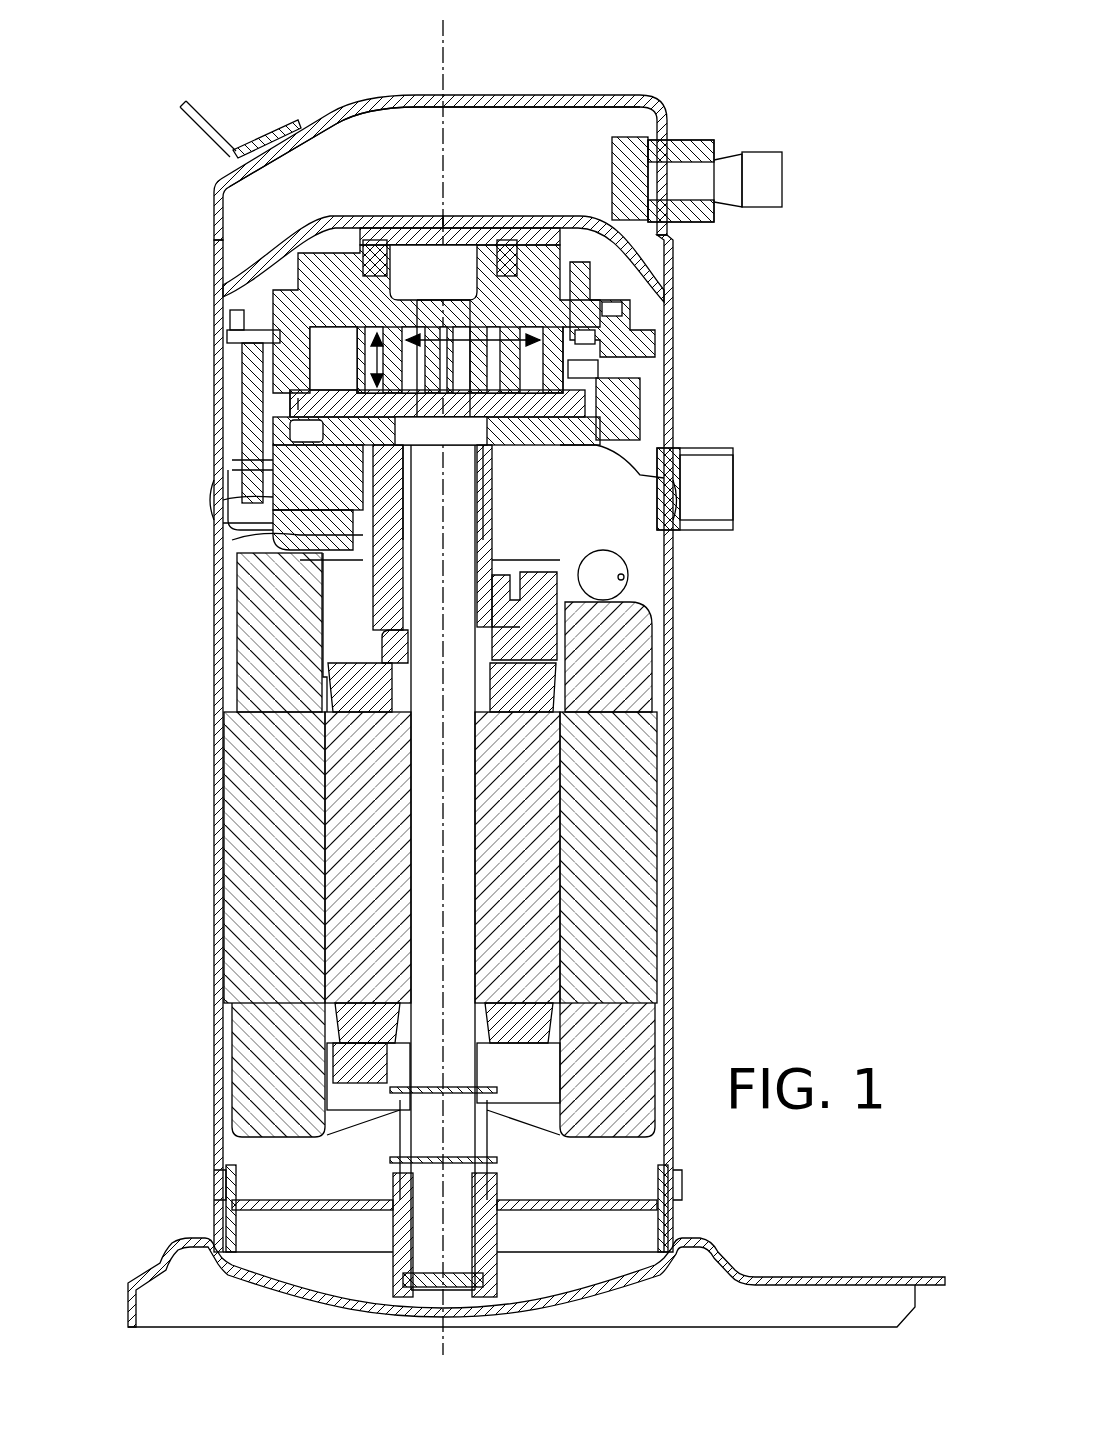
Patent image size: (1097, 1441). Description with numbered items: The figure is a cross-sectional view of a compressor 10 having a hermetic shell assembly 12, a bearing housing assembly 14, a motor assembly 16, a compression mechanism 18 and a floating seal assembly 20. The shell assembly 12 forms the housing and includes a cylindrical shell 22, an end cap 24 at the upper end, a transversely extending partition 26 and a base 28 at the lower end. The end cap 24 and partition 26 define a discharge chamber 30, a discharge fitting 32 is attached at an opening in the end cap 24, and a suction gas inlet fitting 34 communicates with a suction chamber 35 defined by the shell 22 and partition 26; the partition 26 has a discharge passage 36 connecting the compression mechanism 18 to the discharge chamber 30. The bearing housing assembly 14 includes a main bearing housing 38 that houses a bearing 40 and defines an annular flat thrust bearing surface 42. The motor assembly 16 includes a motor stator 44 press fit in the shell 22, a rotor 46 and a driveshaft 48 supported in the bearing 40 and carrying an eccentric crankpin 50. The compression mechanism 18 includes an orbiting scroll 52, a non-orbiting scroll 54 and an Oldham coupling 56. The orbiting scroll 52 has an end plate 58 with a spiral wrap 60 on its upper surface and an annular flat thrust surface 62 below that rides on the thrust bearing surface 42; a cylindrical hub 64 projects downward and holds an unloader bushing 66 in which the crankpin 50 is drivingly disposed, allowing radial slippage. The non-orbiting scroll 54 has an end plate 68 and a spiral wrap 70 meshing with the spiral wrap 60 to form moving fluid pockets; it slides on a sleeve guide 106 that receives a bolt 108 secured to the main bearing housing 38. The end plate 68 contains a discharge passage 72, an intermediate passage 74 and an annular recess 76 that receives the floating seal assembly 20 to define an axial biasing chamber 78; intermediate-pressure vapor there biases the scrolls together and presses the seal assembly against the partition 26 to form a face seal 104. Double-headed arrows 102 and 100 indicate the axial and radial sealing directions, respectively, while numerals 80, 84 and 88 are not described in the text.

The compressor 10 is at (188, 60).
The hermetic shell assembly 12 is at (213, 690).
The bearing housing assembly 14 is at (278, 518).
The motor assembly 16 is at (655, 665).
The compression mechanism 18 is at (605, 298).
The floating seal assembly 20 is at (533, 240).
The cylindrical shell 22 is at (213, 768).
The end cap 24 is at (353, 100).
The partition 26 is at (253, 300).
The base 28 is at (240, 1278).
The discharge chamber 30 is at (415, 118).
The discharge fitting 32 is at (712, 150).
The suction gas inlet fitting 34 is at (735, 540).
The suction chamber 35 is at (645, 543).
The discharge passage 36 is at (472, 222).
The main bearing housing 38 is at (705, 482).
The bearing 40 is at (490, 575).
The annular flat thrust bearing surface 42 is at (300, 400).
The motor stator 44 is at (648, 725).
The rotor 46 is at (548, 805).
The driveshaft 48 is at (455, 925).
The eccentric crankpin 50 is at (362, 478).
The orbiting scroll 52 is at (590, 462).
The non-orbiting scroll 54 is at (635, 320).
The Oldham coupling 56 is at (628, 415).
The end plate 58 is at (236, 358).
The spiral wrap 60 is at (517, 427).
The annular flat thrust surface 62 is at (260, 460).
The cylindrical hub 64 is at (415, 560).
The unloader bushing 66 is at (485, 470).
The end plate 68 is at (318, 268).
The spiral wrap 70 is at (325, 350).
The discharge passage 72 is at (458, 305).
The intermediate passage 74 is at (398, 305).
The annular recess 76 is at (556, 297).
The axial biasing chamber 78 is at (358, 290).
The orbiting scroll end plate 80 is at (343, 433).
The annular recess 84 is at (580, 395).
The seal ring 88 is at (610, 395).
The double headed arrow 100 is at (600, 392).
The double-headed arrow 102 is at (370, 352).
The face seal 104 is at (505, 222).
The sleeve guide 106 is at (243, 408).
The bolt 108 is at (252, 297).